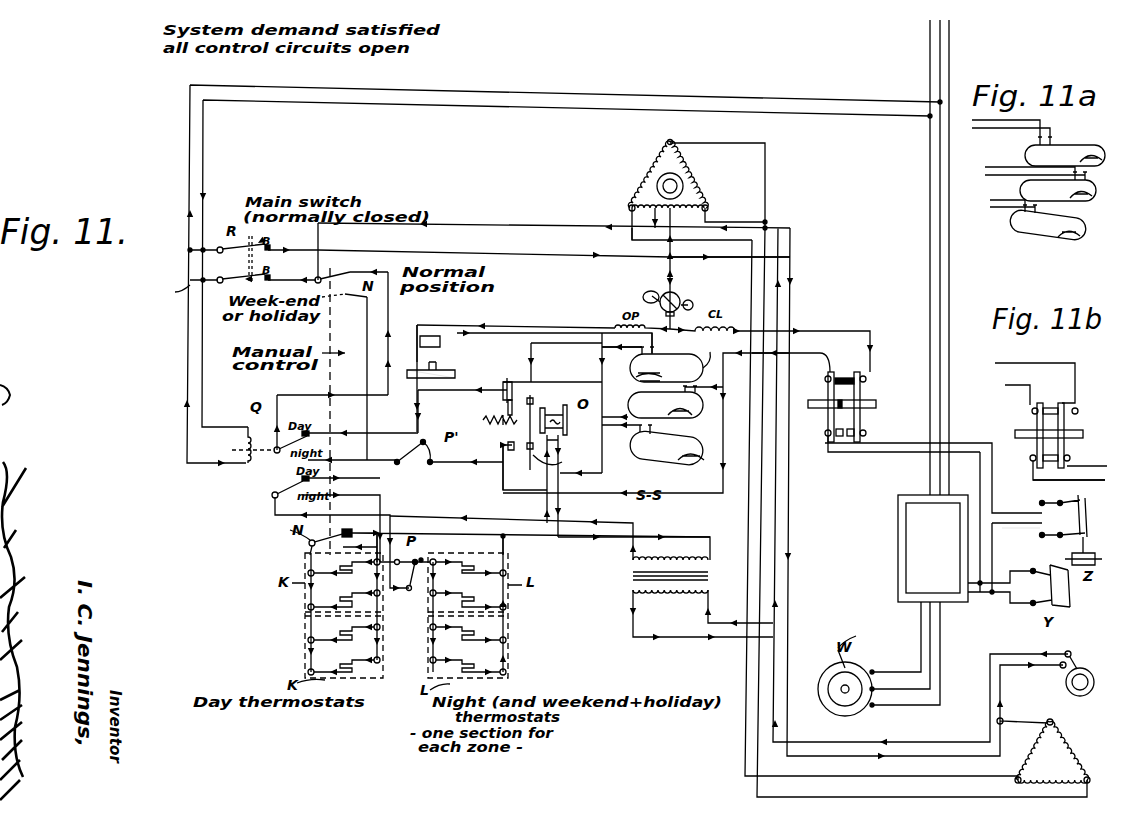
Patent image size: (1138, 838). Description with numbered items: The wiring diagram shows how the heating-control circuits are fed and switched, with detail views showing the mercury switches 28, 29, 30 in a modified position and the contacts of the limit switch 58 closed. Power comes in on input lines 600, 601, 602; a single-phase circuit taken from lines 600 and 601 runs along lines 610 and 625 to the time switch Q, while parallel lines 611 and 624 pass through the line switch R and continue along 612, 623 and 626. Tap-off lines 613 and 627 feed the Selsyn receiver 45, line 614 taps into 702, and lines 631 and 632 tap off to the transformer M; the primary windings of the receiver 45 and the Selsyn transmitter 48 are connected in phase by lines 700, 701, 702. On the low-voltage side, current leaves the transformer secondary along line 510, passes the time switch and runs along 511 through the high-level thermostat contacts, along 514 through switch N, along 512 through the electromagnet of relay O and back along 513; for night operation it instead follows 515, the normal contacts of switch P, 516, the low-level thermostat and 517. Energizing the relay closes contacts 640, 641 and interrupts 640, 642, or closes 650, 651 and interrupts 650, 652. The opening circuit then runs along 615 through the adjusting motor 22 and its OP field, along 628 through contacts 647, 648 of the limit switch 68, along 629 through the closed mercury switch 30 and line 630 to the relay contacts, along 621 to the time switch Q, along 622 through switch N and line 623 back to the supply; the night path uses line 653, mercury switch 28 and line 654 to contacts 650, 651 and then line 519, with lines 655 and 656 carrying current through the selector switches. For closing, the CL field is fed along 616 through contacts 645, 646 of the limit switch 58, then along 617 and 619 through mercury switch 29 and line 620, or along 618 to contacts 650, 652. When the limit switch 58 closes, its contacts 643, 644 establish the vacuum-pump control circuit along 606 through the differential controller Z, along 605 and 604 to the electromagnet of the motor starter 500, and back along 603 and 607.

In FIG. 11, the power supply line 610 is at (243, 87).
In FIG. 11, the power supply line 625 is at (254, 105).
In FIG. 11, the power supply input line 600 is at (930, 178).
In FIG. 11, the power supply input line 601 is at (940, 260).
In FIG. 11, the power supply input line 602 is at (949, 249).
In FIG. 11, the motor starter 500 is at (920, 600).
In FIG. 11, the line 611 is at (215, 245).
In FIG. 11, the line 612 is at (258, 243).
In FIG. 11, the line 626 is at (494, 229).
In FIG. 11, the line 623 is at (303, 276).
In FIG. 11, the line 624 is at (175, 292).
In FIG. 11, the line 656 is at (359, 339).
In FIG. 11, the line 622 is at (389, 312).
In FIG. 11, the line 621 is at (345, 449).
In FIG. 11, the line 655 is at (361, 452).
In FIG. 11, the line 511 is at (372, 529).
In FIG. 11, the line 519 is at (455, 464).
In FIG. 11, the line 510 is at (578, 518).
In FIG. 11, the line 515 is at (326, 519).
In FIG. 11, the line 512 is at (488, 515).
In FIG. 11, the line 517 is at (504, 545).
In FIG. 11, the line 514 is at (305, 553).
In FIG. 11, the line 516 is at (436, 586).
In FIG. 11, the contact of limit switch 68 648 is at (443, 340).
In FIG. 11, the contact of limit switch 68 647 is at (407, 342).
In FIG. 11, the limit switch 68 is at (440, 352).
In FIG. 11, the line 628 is at (548, 324).
In FIG. 11, the line 629 is at (516, 345).
In FIG. 11, the relay contact 640 is at (502, 384).
In FIG. 11, the line 620 is at (552, 374).
In FIG. 11, the line 630 is at (577, 348).
In FIG. 11, the relay contact 641 is at (549, 427).
In FIG. 11, the relay contact 642 is at (505, 405).
In FIG. 11, the relay contact 652 is at (510, 443).
In FIG. 11, the line 653 is at (556, 410).
In FIG. 11, the line 654 is at (572, 485).
In FIG. 11, the relay contact 651 is at (562, 463).
In FIG. 11, the relay contact 650 is at (518, 469).
In FIG. 11, the line 513 is at (560, 478).
In FIG. 11, the line 631 is at (680, 634).
In FIG. 11, the line 632 is at (710, 618).
In FIG. 11, the mercury switch 30 is at (630, 372).
In FIG. 11A, the mercury switch 30 is at (1024, 153).
In FIG. 11, the mercury switch 29 is at (628, 405).
In FIG. 11A, the mercury switch 29 is at (1019, 190).
In FIG. 11, the mercury switch 28 is at (630, 443).
In FIG. 11A, the mercury switch 28 is at (1008, 220).
In FIG. 11, the line 619 is at (708, 356).
In FIG. 11, the line 618 is at (725, 395).
In FIG. 11, the Selsyn receiver 45 is at (640, 182).
In FIG. 11, the line 700 is at (718, 142).
In FIG. 11, the line 702 is at (733, 212).
In FIG. 11, the line 701 is at (632, 218).
In FIG. 11, the line 613 is at (671, 222).
In FIG. 11, the line 614 is at (700, 256).
In FIG. 11, the line 627 is at (633, 232).
In FIG. 11, the line 615 is at (668, 275).
In FIG. 11, the adjusting motor 22 is at (682, 298).
In FIG. 11, the line 616 is at (836, 329).
In FIG. 11B, the line 616 is at (1022, 360).
In FIG. 11, the line 617 is at (808, 348).
In FIG. 11B, the line 617 is at (1024, 384).
In FIG. 11, the limit switch 58 is at (824, 431).
In FIG. 11B, the limit switch 58 is at (1025, 431).
In FIG. 11, the contact of limit switch 58 645 is at (825, 382).
In FIG. 11B, the contact of limit switch 58 645 is at (1034, 410).
In FIG. 11, the contact of limit switch 58 646 is at (866, 379).
In FIG. 11B, the contact of limit switch 58 646 is at (1092, 410).
In FIG. 11, the contact of limit switch 58 644 is at (864, 433).
In FIG. 11B, the contact of limit switch 58 644 is at (1070, 459).
In FIG. 11, the contact of limit switch 58 643 is at (826, 444).
In FIG. 11B, the contact of limit switch 58 643 is at (1030, 459).
In FIG. 11, the line 606 is at (893, 442).
In FIG. 11, the line 607 is at (872, 453).
In FIG. 11B, the line 607 is at (1037, 483).
In FIG. 11, the line 605 is at (1003, 533).
In FIG. 11B, the line 605 is at (1020, 528).
In FIG. 11, the line 603 is at (1000, 580).
In FIG. 11, the line 604 is at (995, 600).
In FIG. 11, the Selsyn transmitter 48 is at (1055, 725).